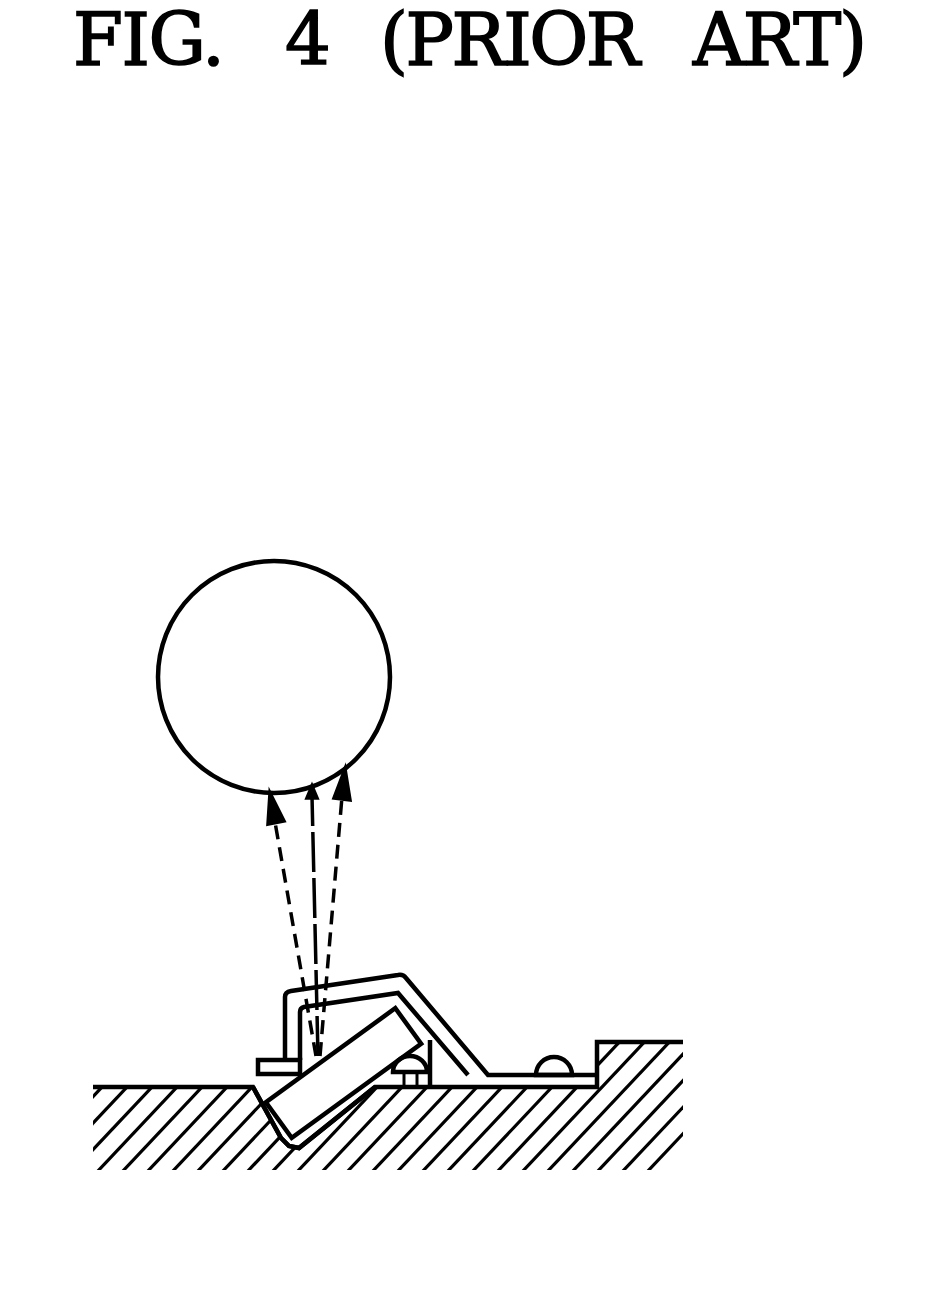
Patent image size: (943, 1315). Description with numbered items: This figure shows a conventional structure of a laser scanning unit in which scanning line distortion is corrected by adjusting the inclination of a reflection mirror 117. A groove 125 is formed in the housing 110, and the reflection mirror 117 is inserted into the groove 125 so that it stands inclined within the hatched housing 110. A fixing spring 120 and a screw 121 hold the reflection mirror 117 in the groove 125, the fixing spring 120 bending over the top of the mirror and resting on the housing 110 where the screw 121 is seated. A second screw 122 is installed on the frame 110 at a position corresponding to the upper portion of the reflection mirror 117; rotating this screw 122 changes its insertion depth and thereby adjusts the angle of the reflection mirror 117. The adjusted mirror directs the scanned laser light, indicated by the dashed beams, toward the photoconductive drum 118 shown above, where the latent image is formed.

The housing 110 is at (630, 1137).
The reflection mirror 117 is at (324, 1093).
The photoconductive drum 118 is at (167, 731).
The fixing spring 120 is at (423, 1012).
The screw 121 is at (565, 1057).
The screw 122 is at (423, 1093).
The groove 125 is at (296, 1150).